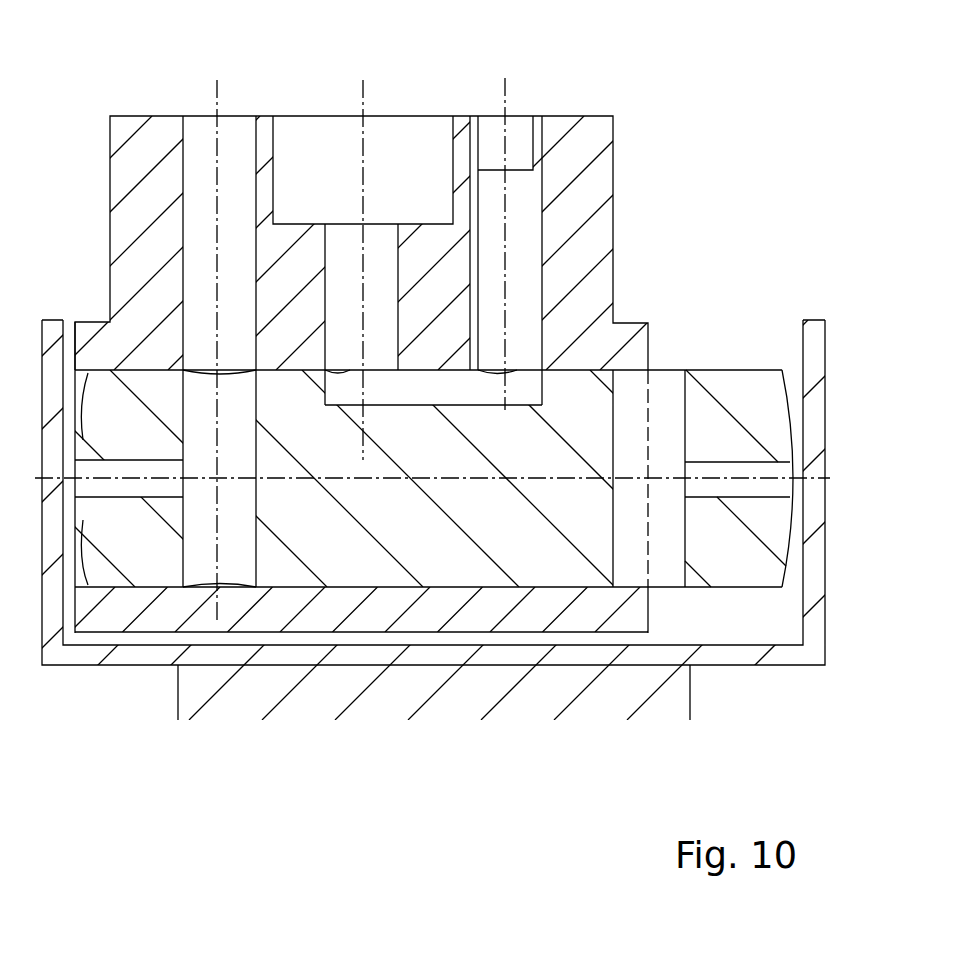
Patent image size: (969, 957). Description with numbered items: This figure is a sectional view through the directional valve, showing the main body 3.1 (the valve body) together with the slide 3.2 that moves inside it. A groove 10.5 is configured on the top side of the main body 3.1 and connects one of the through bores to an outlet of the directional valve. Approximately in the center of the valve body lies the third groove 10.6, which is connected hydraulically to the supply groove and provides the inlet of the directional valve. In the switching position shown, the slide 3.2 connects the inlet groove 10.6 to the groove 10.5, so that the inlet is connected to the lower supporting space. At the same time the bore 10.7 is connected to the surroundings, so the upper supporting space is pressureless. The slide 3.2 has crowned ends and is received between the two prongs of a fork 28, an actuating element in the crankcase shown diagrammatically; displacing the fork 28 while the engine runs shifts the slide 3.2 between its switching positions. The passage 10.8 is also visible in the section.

The main body 3.1 is at (595, 222).
The slide 3.2 is at (597, 398).
The groove 10.5 is at (515, 140).
The third groove 10.6 is at (403, 140).
The bore 10.7 is at (183, 226).
The bore 10.8 is at (542, 300).
The fork 28 is at (132, 657).